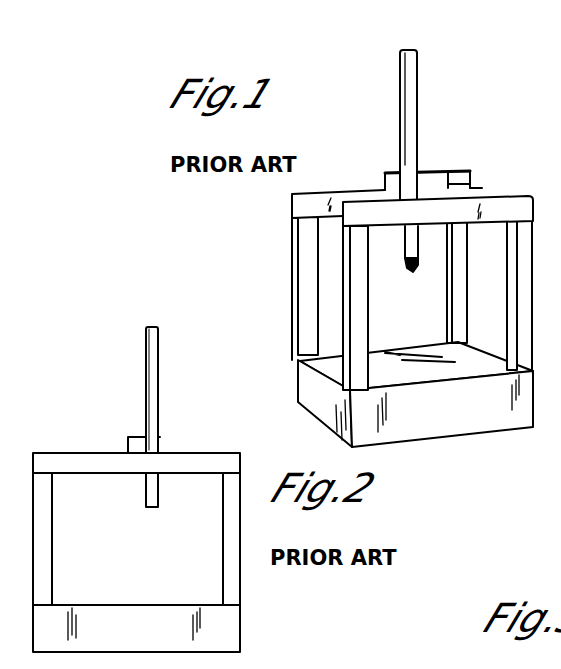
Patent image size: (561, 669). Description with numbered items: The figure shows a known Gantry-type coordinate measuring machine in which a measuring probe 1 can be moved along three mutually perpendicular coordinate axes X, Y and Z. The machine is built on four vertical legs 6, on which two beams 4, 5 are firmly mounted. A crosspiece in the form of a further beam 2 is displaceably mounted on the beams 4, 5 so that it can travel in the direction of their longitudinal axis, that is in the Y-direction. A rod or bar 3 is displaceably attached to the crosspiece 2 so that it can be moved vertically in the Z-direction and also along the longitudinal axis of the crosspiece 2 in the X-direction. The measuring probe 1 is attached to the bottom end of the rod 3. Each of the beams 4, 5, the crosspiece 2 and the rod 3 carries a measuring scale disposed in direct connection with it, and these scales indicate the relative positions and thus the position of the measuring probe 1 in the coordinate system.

In FIG. 1, the measuring probe 1 is at (418, 261).
In FIG. 1, the crosspiece 2 is at (458, 184).
In FIG. 2, the crosspiece 2 is at (128, 437).
In FIG. 1, the rod 3 is at (417, 104).
In FIG. 2, the rod 3 is at (158, 381).
In FIG. 1, the beam 4 is at (323, 197).
In FIG. 1, the beam 5 is at (497, 200).
In FIG. 2, the beam 5 is at (182, 456).
In FIG. 1, the vertical legs 6 is at (357, 298).
In FIG. 2, the vertical legs 6 is at (52, 542).